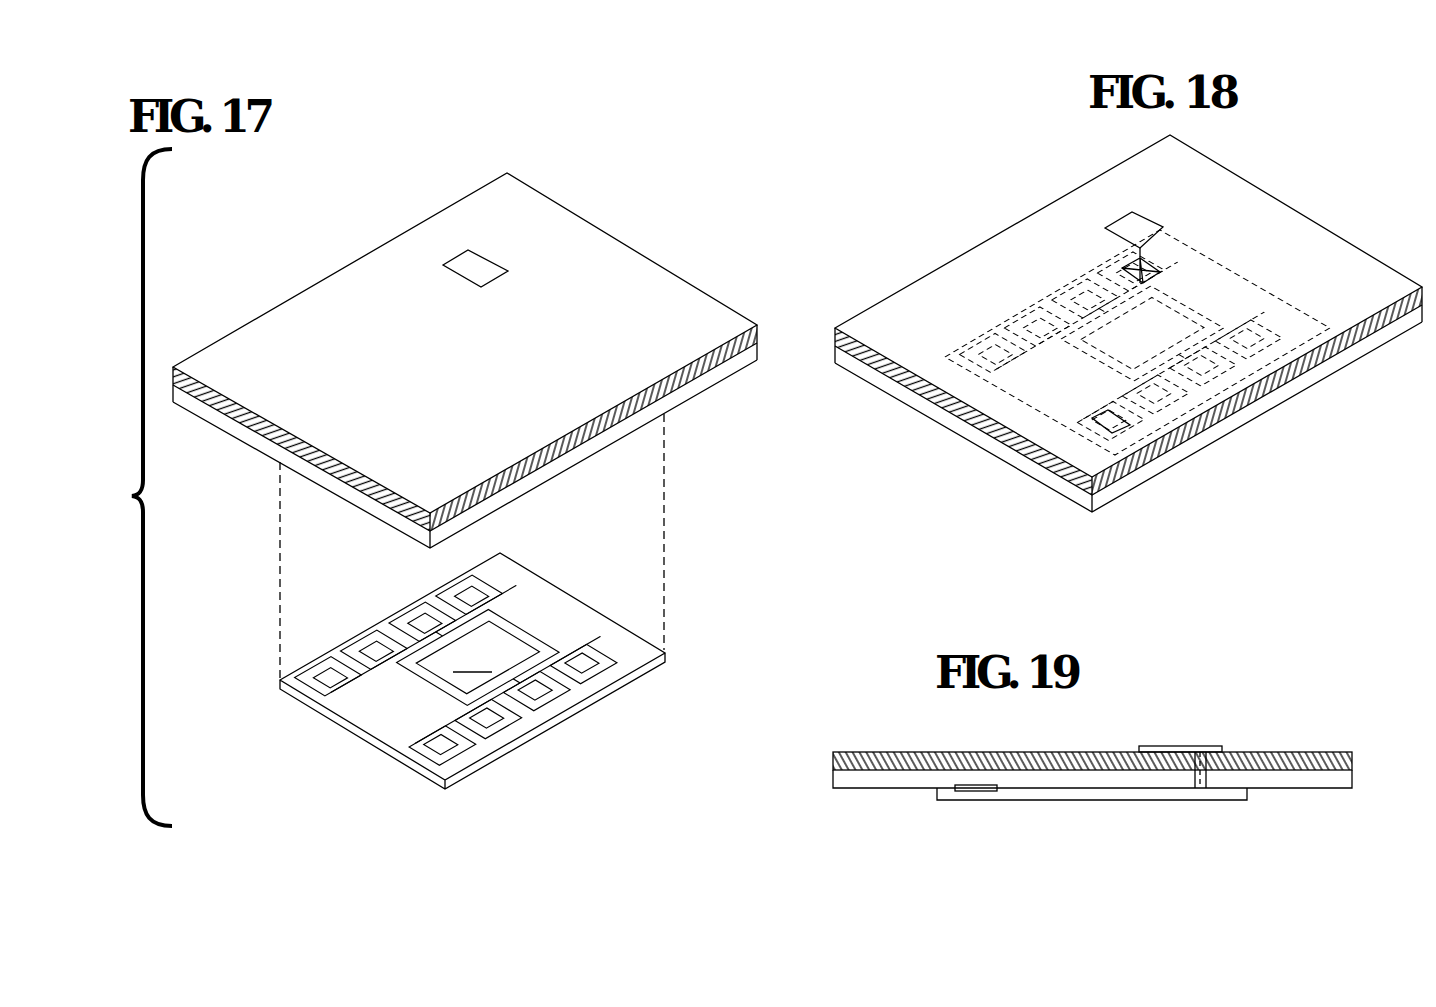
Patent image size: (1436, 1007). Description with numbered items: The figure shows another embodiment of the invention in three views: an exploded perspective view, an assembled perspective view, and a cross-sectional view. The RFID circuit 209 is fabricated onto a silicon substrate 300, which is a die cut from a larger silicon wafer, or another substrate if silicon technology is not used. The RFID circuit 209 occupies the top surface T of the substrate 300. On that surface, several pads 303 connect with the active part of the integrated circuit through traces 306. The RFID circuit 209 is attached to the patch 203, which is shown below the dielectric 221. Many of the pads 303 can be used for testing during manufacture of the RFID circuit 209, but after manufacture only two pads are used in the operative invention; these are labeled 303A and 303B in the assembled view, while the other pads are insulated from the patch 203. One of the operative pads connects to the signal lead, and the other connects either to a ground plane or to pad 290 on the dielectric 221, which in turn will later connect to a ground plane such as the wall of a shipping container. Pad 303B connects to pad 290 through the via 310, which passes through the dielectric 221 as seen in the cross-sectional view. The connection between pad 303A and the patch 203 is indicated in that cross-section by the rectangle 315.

In FIG. 17, the dielectric 221 is at (612, 232).
In FIG. 18, the dielectric 221 is at (1347, 238).
In FIG. 19, the dielectric 221 is at (1300, 752).
In FIG. 17, the patch 203 is at (698, 401).
In FIG. 18, the patch 203 is at (1315, 380).
In FIG. 19, the patch 203 is at (1315, 790).
In FIG. 17, the pad 290 is at (486, 286).
In FIG. 18, the pad 290 is at (1115, 222).
In FIG. 19, the pad 290 is at (1175, 746).
In FIG. 17, the RFID circuit 209 is at (427, 792).
In FIG. 17, the silicon substrate 300 is at (620, 630).
In FIG. 17, the pads 303 is at (603, 676).
In FIG. 17, the traces 306 is at (575, 628).
In FIG. 18, the pad 303A is at (1118, 434).
In FIG. 18, the pad 303B is at (1160, 262).
In FIG. 18, the via 310 is at (1126, 249).
In FIG. 19, the via 310 is at (1212, 789).
In FIG. 19, the rectangle 315 is at (975, 793).
In FIG. 17, the top surface T is at (294, 674).